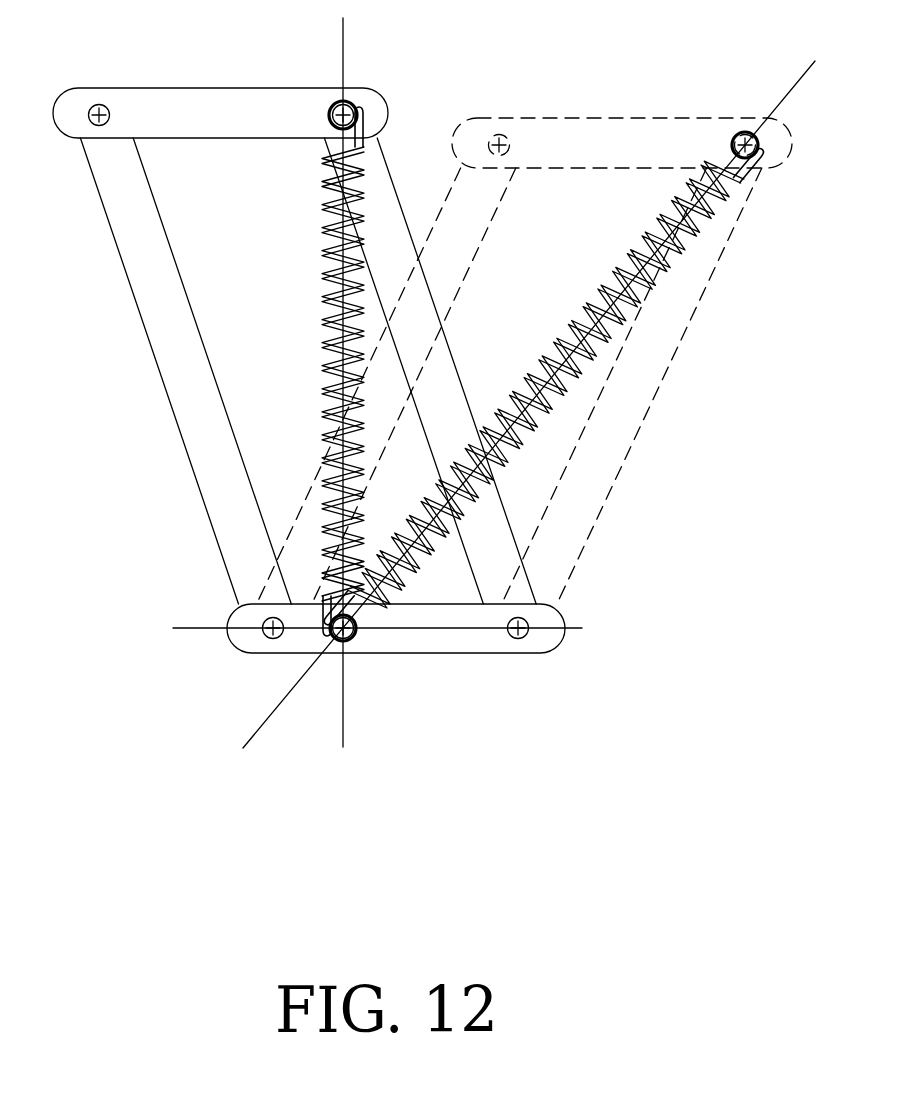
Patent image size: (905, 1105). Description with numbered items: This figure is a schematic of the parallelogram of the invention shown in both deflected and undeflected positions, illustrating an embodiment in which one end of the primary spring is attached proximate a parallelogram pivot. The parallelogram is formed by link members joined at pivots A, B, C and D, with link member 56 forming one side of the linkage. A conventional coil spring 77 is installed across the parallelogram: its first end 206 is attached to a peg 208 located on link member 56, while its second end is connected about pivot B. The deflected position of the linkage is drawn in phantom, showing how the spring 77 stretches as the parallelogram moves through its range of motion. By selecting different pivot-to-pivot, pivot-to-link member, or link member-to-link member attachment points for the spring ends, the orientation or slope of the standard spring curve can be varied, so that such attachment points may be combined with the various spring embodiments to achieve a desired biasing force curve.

The link member 56 is at (490, 640).
The coil spring 77 is at (322, 340).
The first end 206 is at (358, 650).
The peg 208 is at (358, 108).
The pivot A is at (99, 112).
The pivot B is at (340, 112).
The pivot C is at (268, 622).
The pivot D is at (550, 656).